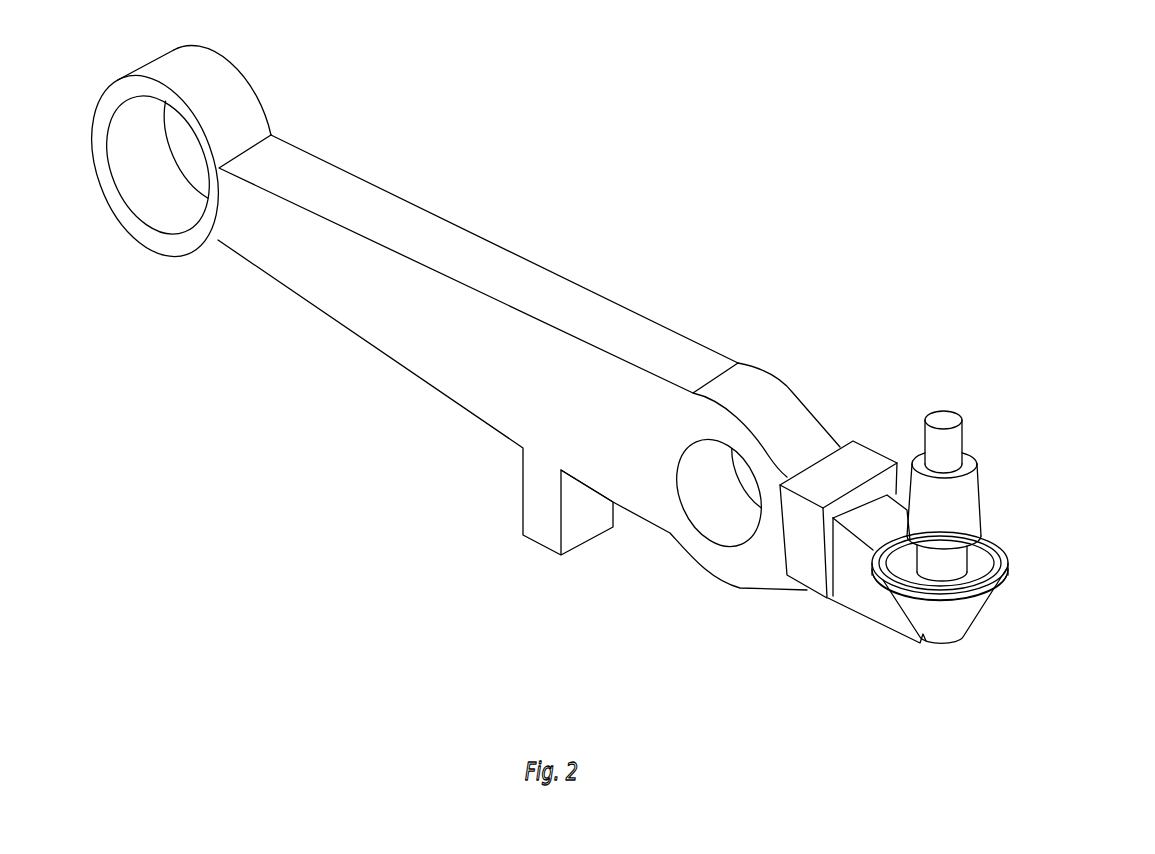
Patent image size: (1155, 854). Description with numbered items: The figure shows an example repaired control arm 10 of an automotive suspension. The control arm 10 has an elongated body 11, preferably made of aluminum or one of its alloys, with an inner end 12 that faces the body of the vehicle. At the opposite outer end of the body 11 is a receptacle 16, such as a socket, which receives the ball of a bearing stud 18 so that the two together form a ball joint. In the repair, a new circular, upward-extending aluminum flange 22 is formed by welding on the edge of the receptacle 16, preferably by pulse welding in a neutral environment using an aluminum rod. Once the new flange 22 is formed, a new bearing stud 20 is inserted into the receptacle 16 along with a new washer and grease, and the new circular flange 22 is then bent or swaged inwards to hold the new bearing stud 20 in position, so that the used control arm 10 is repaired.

The control arm 10 is at (763, 290).
The elongated body 11 is at (553, 305).
The inner end 12 is at (332, 133).
The receptacle 16 is at (967, 622).
The bearing stud 18 is at (1032, 480).
The new bearing stud 20 is at (960, 497).
The new circular flange 22 is at (1010, 550).